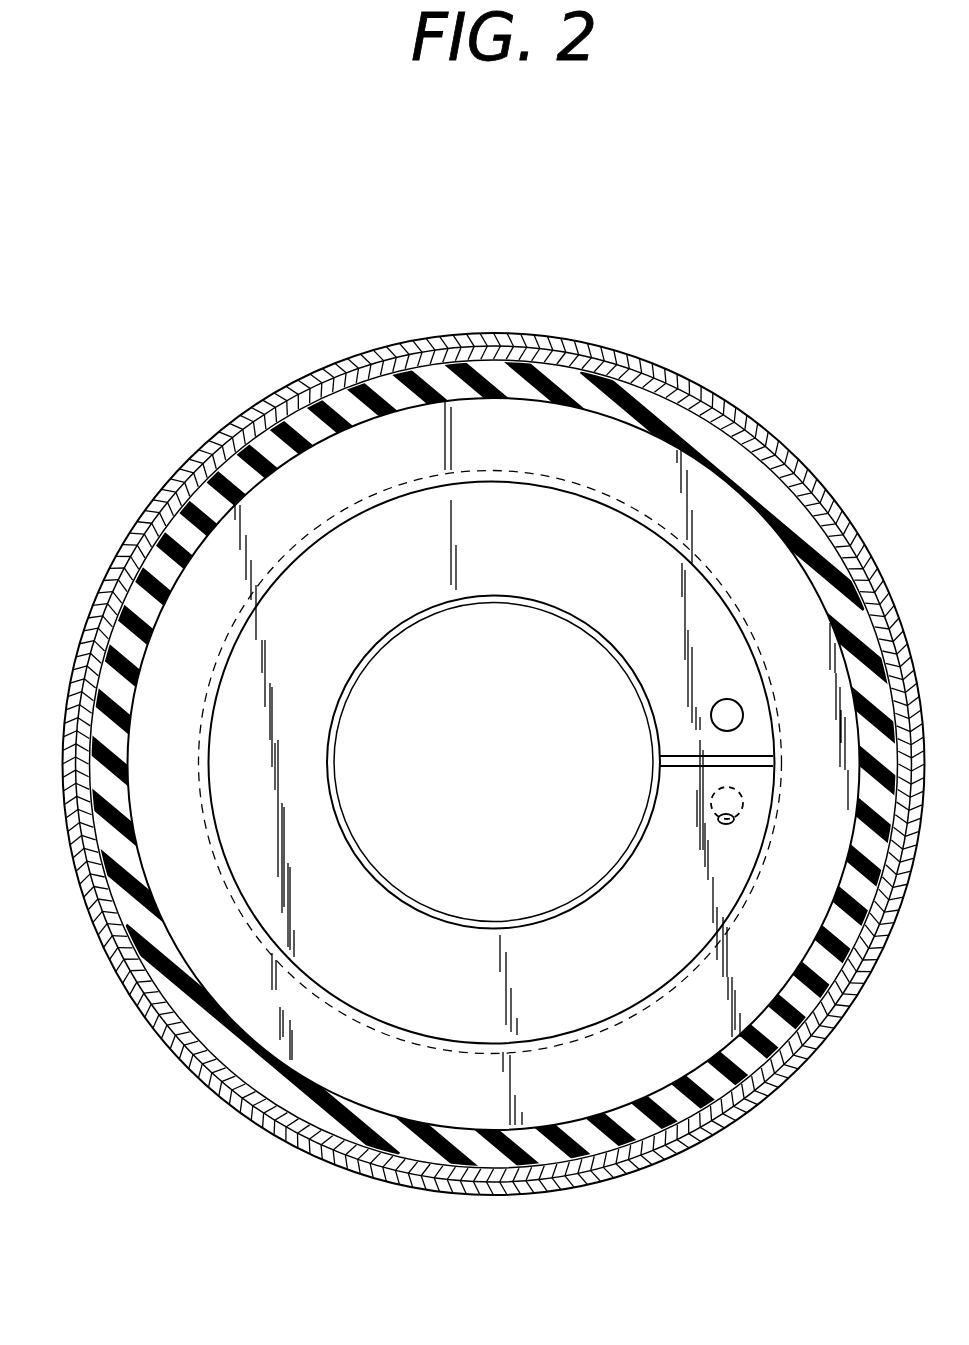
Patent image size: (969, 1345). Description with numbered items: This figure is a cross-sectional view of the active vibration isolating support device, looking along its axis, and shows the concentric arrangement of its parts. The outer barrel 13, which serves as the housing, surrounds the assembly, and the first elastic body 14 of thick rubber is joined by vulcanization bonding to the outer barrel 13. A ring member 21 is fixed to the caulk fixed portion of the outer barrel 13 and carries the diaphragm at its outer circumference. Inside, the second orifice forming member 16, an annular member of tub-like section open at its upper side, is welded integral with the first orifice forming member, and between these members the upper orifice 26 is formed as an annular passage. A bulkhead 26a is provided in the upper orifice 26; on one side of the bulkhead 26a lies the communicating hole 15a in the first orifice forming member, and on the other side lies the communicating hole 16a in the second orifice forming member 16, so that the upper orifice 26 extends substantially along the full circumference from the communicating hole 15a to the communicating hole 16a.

The outer barrel 13 is at (738, 408).
The first elastic body 14 is at (497, 376).
The ring member 21 is at (265, 412).
The upper orifice 26 is at (584, 573).
The bulkhead 26a is at (682, 766).
The second orifice forming member 16 is at (410, 630).
The communicating hole 16a is at (712, 709).
The communicating hole 15a is at (715, 822).